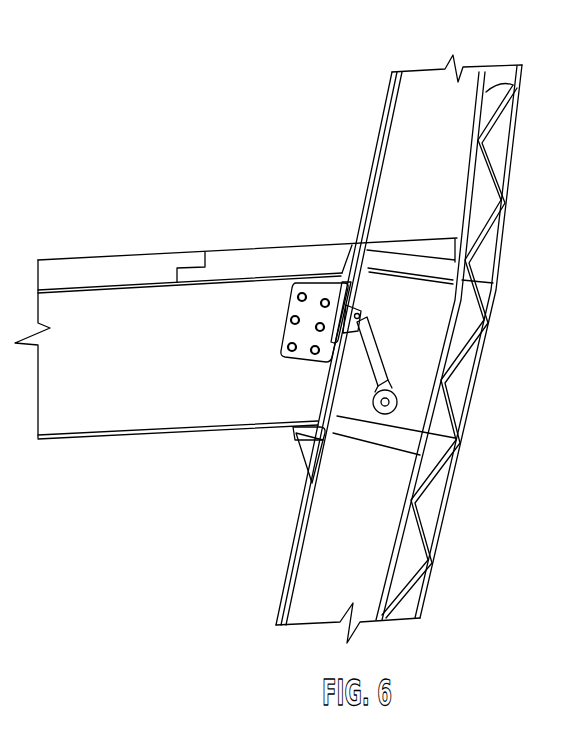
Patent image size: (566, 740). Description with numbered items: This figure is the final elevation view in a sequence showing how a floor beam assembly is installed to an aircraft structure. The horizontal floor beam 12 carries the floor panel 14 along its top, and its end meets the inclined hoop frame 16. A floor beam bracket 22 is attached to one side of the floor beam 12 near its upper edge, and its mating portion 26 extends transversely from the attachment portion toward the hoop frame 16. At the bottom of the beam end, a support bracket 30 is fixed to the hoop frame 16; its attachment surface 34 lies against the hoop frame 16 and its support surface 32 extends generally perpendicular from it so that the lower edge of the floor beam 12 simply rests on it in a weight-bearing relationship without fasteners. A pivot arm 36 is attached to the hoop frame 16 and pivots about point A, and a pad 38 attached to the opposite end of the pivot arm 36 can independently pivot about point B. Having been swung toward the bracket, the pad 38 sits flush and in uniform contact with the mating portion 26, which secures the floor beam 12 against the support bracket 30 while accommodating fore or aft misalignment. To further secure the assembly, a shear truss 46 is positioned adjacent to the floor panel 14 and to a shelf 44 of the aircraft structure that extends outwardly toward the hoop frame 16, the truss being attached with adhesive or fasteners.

The floor beam 12 is at (254, 340).
The floor panel 14 is at (118, 258).
The hoop frame 16 is at (382, 349).
The floor beam bracket 22 is at (281, 342).
The mating portion 26 is at (347, 280).
The support bracket 30 is at (300, 450).
The support surface 32 is at (240, 430).
The attachment surface 34 is at (300, 492).
The pivot arm 36 is at (378, 350).
The pad 38 is at (358, 292).
The shelf 44 is at (485, 258).
The shear truss 46 is at (293, 250).
The pivot point A is at (400, 400).
The pivot point B is at (362, 300).